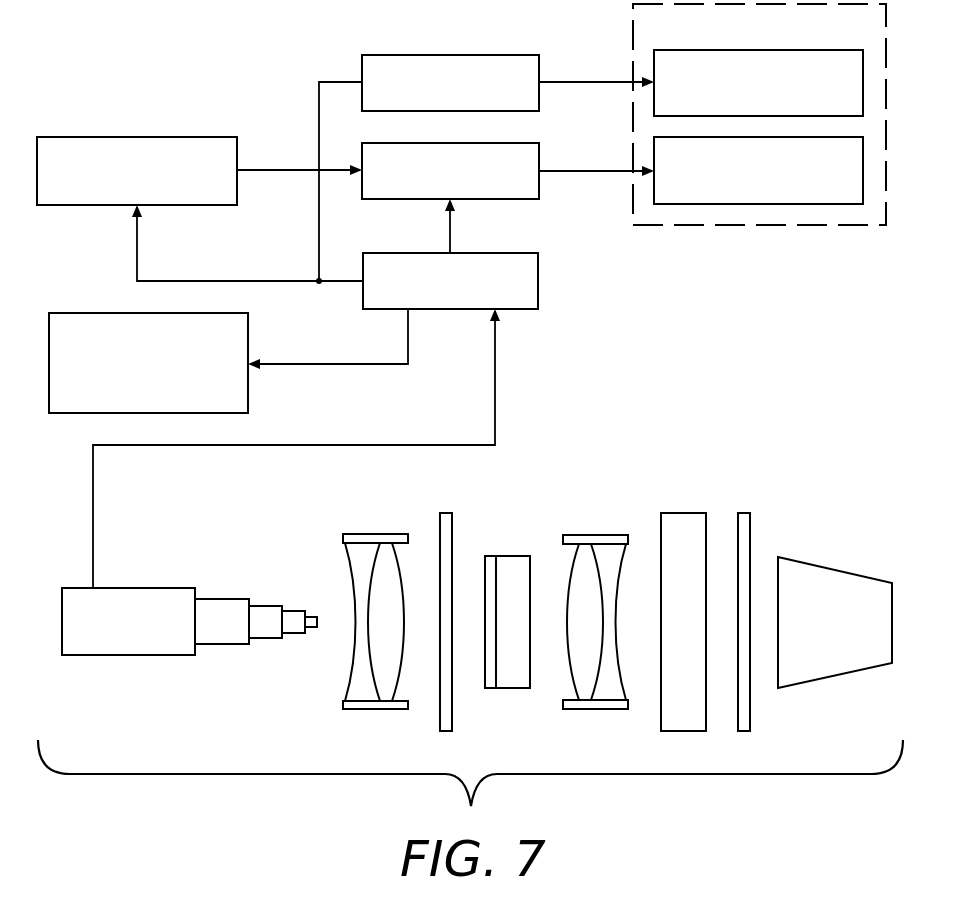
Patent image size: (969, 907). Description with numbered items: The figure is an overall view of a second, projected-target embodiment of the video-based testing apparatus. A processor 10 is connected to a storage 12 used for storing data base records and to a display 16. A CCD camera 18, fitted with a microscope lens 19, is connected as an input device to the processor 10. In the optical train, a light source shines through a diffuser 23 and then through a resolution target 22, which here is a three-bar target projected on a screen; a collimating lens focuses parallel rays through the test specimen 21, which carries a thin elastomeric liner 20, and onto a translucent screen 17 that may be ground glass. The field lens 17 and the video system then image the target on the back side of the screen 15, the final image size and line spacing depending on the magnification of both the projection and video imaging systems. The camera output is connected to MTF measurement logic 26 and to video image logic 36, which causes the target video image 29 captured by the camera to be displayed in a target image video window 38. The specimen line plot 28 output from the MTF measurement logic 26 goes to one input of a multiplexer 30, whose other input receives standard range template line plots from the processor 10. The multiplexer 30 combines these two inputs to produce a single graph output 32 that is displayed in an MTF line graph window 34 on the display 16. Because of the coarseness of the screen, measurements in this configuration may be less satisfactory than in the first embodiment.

The processor 10 is at (525, 253).
The storage 12 is at (75, 313).
The screen 15 is at (376, 710).
The display 16 is at (632, 12).
The translucent screen 17 is at (447, 512).
The CCD camera 18 is at (162, 588).
The microscope lens 19 is at (312, 615).
The thin elastomeric liner 20 is at (490, 690).
The test specimen 21 is at (512, 556).
The resolution target 22 is at (684, 512).
The diffuser 23 is at (745, 512).
The MTF measurement logic 26 is at (75, 137).
The specimen line plot 28 is at (280, 172).
The target video image 29 is at (318, 126).
The multiplexer 30 is at (527, 143).
The single graph output 32 is at (562, 177).
The MTF line graph window 34 is at (835, 205).
The video image logic 36 is at (406, 55).
The target image video window 38 is at (810, 50).